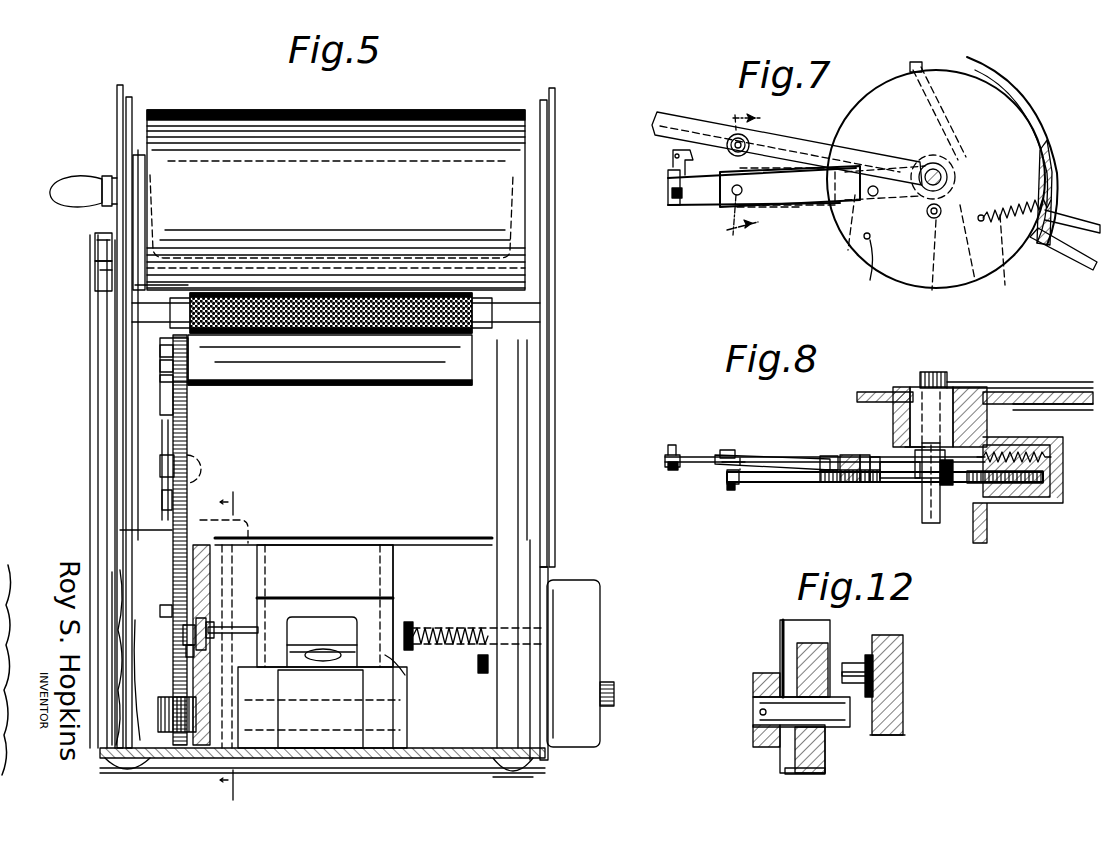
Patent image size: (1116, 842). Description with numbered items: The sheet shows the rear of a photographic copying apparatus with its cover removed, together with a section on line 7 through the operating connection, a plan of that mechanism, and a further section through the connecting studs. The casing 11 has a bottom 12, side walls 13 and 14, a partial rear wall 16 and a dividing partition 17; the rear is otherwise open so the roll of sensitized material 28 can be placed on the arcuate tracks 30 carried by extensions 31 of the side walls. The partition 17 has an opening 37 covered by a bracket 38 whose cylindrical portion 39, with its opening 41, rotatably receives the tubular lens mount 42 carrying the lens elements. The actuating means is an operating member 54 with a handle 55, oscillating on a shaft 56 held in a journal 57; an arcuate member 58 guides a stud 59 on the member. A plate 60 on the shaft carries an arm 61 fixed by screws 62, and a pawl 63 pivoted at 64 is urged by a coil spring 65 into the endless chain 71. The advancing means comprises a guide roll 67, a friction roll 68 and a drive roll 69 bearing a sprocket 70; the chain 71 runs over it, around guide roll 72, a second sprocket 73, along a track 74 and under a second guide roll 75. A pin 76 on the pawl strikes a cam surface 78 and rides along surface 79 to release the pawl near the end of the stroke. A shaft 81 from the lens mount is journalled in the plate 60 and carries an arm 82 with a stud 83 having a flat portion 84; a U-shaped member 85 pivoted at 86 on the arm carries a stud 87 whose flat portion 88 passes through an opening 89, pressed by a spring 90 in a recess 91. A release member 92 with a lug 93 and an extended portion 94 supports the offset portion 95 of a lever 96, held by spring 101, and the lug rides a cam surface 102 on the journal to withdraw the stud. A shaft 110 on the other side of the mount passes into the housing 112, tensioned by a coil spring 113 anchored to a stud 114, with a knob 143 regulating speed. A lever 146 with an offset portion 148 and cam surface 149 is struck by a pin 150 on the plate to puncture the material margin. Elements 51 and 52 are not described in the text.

In FIG. 5, the section line 7— 7 is at (232, 642).
In FIG. 5, the casing 11 is at (552, 358).
In FIG. 5, the bottom 12 is at (460, 760).
In FIG. 7, the bottom 12 is at (743, 173).
In FIG. 5, the side wall 13 is at (118, 370).
In FIG. 5, the side wall 14 is at (540, 462).
In FIG. 5, the partial rear wall 16 is at (520, 745).
In FIG. 5, the dividing partition 17 is at (353, 489).
In FIG. 7, the dividing partition 17 is at (1040, 95).
In FIG. 5, the roll of sensitized material 28 is at (336, 200).
In FIG. 5, the arcuate tracks 30 is at (108, 413).
In FIG. 5, the extensions 31 is at (128, 445).
In FIG. 5, the opening 37 is at (408, 669).
In FIG. 5, the bracket 38 is at (385, 578).
In FIG. 5, the cylindrical portion 39 is at (375, 618).
In FIG. 5, the opening 41 is at (295, 625).
In FIG. 5, the tubular lens mount 42 is at (330, 630).
In FIG. 5, the disc 51 is at (325, 661).
In FIG. 5, the support block 52 is at (270, 712).
In FIG. 5, the operating member 54 is at (108, 217).
In FIG. 8, the operating member 54 is at (1020, 385).
In FIG. 5, the handle 55 is at (48, 186).
In FIG. 8, the shaft 56 is at (950, 385).
In FIG. 5, the journal 57 is at (150, 580).
In FIG. 8, the journal 57 is at (918, 380).
In FIG. 5, the arcuate member 58 is at (98, 297).
In FIG. 5, the stud 59 is at (95, 265).
In FIG. 5, the plate 60 is at (138, 531).
In FIG. 7, the plate 60 is at (875, 95).
In FIG. 8, the plate 60 is at (1010, 500).
In FIG. 5, the arm 61 is at (200, 745).
In FIG. 7, the arm 61 is at (805, 165).
In FIG. 8, the arm 61 is at (762, 490).
In FIG. 12, the arm 61 is at (790, 660).
In FIG. 7, the screws 62 is at (876, 196).
In FIG. 8, the screws 62 is at (876, 482).
In FIG. 5, the pawl 63 is at (220, 535).
In FIG. 7, the pawl 63 is at (668, 172).
In FIG. 8, the pawl 63 is at (690, 455).
In FIG. 7, the pivot 64 is at (672, 198).
In FIG. 8, the pivot 64 is at (670, 470).
In FIG. 7, the coil spring 65 is at (668, 186).
In FIG. 8, the coil spring 65 is at (665, 460).
In FIG. 5, the guide roll 67 is at (525, 295).
In FIG. 5, the friction roll 68 is at (372, 292).
In FIG. 5, the drive roll 69 is at (412, 385).
In FIG. 5, the sprocket 70 is at (120, 345).
In FIG. 5, the endless chain 71 is at (190, 428).
In FIG. 5, the guide roll 72 is at (190, 466).
In FIG. 5, the second sprocket 73 is at (150, 745).
In FIG. 5, the track 74 is at (185, 485).
In FIG. 5, the second guide roll 75 is at (188, 395).
In FIG. 5, the pin 76 is at (160, 618).
In FIG. 7, the pin 76 is at (672, 160).
In FIG. 8, the pin 76 is at (668, 450).
In FIG. 5, the cam surface 78 is at (188, 445).
In FIG. 5, the surface 79 is at (188, 413).
In FIG. 5, the shaft 81 is at (240, 627).
In FIG. 7, the shaft 81 is at (945, 170).
In FIG. 8, the shaft 81 is at (931, 523).
In FIG. 5, the arm 82 is at (212, 640).
In FIG. 7, the arm 82 is at (880, 165).
In FIG. 8, the arm 82 is at (852, 482).
In FIG. 12, the arm 82 is at (905, 642).
In FIG. 5, the stud 83 is at (192, 657).
In FIG. 7, the stud 83 is at (745, 142).
In FIG. 8, the stud 83 is at (730, 490).
In FIG. 12, the stud 83 is at (895, 678).
In FIG. 7, the flat portion 84 is at (732, 138).
In FIG. 8, the flat portion 84 is at (727, 482).
In FIG. 12, the flat portion 84 is at (850, 660).
In FIG. 5, the U-shaped member 85 is at (200, 612).
In FIG. 7, the U-shaped member 85 is at (730, 215).
In FIG. 8, the U-shaped member 85 is at (775, 455).
In FIG. 12, the U-shaped member 85 is at (782, 645).
In FIG. 7, the pivot 86 is at (856, 243).
In FIG. 8, the pivot 86 is at (828, 456).
In FIG. 5, the stud 87 is at (195, 620).
In FIG. 7, the stud 87 is at (750, 195).
In FIG. 8, the stud 87 is at (727, 450).
In FIG. 12, the stud 87 is at (780, 752).
In FIG. 7, the flat portion 88 is at (733, 195).
In FIG. 8, the flat portion 88 is at (727, 477).
In FIG. 12, the flat portion 88 is at (845, 720).
In FIG. 8, the opening 89 is at (742, 458).
In FIG. 12, the opening 89 is at (815, 775).
In FIG. 8, the spring 90 is at (840, 482).
In FIG. 8, the recess 91 is at (866, 482).
In FIG. 7, the release member 92 is at (925, 220).
In FIG. 8, the release member 92 is at (895, 458).
In FIG. 7, the lug 93 is at (958, 135).
In FIG. 8, the lug 93 is at (915, 452).
In FIG. 7, the extended portion 94 is at (936, 268).
In FIG. 7, the offset portion 95 is at (969, 258).
In FIG. 8, the offset portion 95 is at (950, 485).
In FIG. 7, the lever 96 is at (1078, 235).
In FIG. 8, the lever 96 is at (1075, 392).
In FIG. 7, the spring 101 is at (1014, 253).
In FIG. 8, the spring 101 is at (1035, 455).
In FIG. 7, the cam surface 102 is at (924, 158).
In FIG. 8, the cam surface 102 is at (918, 445).
In FIG. 5, the shaft 110 is at (445, 650).
In FIG. 5, the housing 112 is at (598, 582).
In FIG. 5, the coil spring 113 is at (462, 615).
In FIG. 5, the stud 114 is at (483, 673).
In FIG. 5, the knob 143 is at (614, 685).
In FIG. 7, the lever 146 is at (656, 125).
In FIG. 7, the offset portion 148 is at (818, 130).
In FIG. 7, the cam surface 149 is at (851, 239).
In FIG. 7, the pin 150 is at (881, 271).